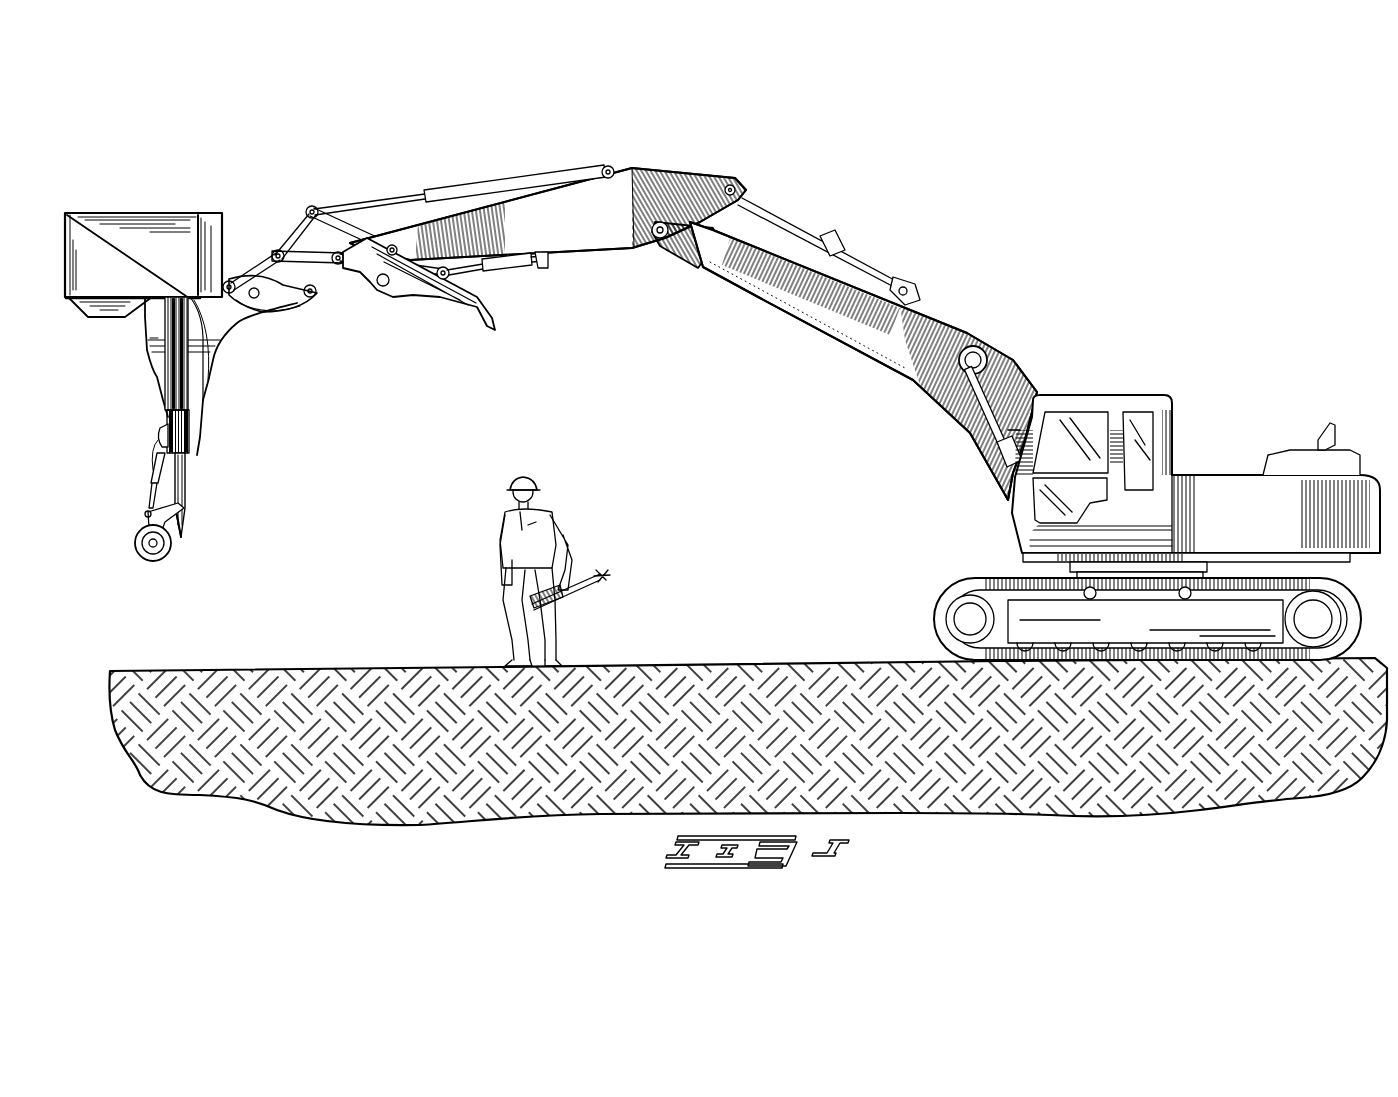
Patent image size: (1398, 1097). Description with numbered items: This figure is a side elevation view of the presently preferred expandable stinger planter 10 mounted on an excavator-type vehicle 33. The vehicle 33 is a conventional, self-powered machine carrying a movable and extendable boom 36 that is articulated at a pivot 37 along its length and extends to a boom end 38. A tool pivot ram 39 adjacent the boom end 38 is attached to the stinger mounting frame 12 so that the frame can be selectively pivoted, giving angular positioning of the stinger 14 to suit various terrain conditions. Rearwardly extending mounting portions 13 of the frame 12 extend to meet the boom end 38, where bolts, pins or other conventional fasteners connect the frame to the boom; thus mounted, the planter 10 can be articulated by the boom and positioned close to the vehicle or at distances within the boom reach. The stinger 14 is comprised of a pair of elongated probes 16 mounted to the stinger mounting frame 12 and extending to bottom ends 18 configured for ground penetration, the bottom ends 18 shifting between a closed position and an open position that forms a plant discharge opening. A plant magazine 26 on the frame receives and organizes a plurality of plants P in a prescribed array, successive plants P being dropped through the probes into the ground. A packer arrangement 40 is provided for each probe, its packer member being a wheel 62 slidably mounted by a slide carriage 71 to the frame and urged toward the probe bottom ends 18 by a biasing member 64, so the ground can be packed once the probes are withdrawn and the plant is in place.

The expandable stinger planter 10 is at (697, 319).
The stinger mounting frame 12 is at (195, 446).
The rearwardly extending mounting portions 13 is at (283, 302).
The stinger 14 is at (238, 512).
The elongated probes 16 is at (186, 526).
The bottom ends 18 is at (193, 514).
The plant magazine 26 is at (206, 212).
The vehicle 33 is at (1158, 394).
The boom 36 is at (725, 285).
The pivot 37 is at (657, 240).
The boom end 38 is at (392, 244).
The tool pivot ram 39 is at (490, 178).
The packer arrangement 40 is at (144, 557).
The packer wheel 62 is at (142, 538).
The biasing member 64 is at (152, 469).
The slide carriage 71 is at (191, 432).
The plants P is at (590, 570).